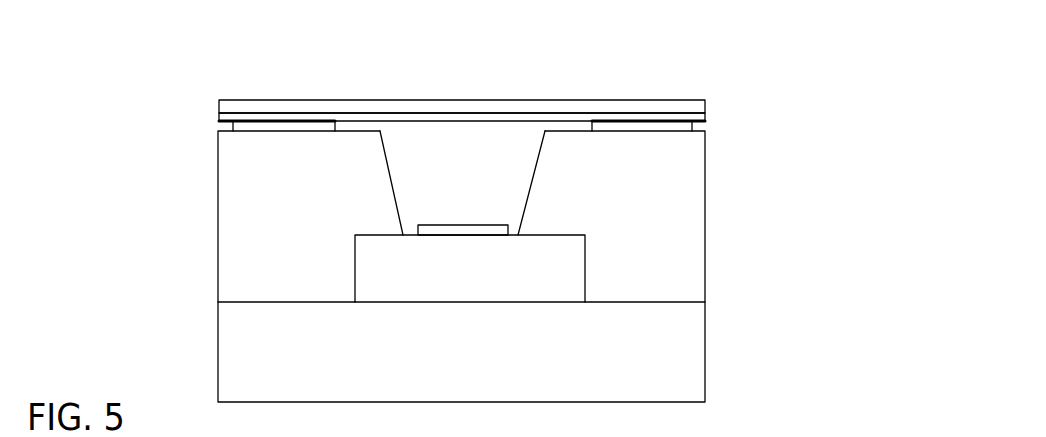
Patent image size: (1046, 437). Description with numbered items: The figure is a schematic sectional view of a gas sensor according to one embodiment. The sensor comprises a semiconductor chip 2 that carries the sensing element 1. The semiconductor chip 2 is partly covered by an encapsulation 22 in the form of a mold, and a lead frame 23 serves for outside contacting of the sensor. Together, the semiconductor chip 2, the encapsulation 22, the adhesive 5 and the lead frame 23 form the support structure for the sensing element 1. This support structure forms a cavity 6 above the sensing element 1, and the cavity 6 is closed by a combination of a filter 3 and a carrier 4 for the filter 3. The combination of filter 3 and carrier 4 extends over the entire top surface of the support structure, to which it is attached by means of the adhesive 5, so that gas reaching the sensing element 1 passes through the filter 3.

The sensing element 1 is at (473, 223).
The semiconductor chip 2 is at (515, 275).
The filter 3 is at (538, 118).
The carrier 4 is at (670, 111).
The adhesive 5 is at (693, 131).
The cavity 6 is at (423, 148).
The encapsulation 22 is at (461, 216).
The lead frame 23 is at (461, 352).